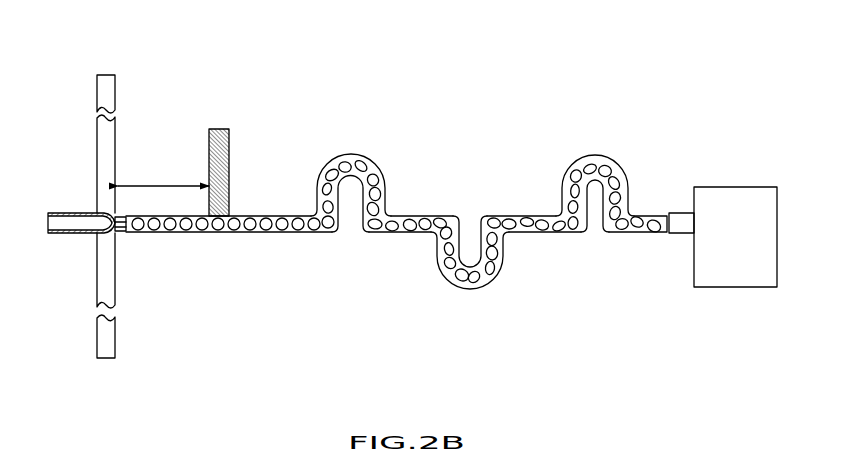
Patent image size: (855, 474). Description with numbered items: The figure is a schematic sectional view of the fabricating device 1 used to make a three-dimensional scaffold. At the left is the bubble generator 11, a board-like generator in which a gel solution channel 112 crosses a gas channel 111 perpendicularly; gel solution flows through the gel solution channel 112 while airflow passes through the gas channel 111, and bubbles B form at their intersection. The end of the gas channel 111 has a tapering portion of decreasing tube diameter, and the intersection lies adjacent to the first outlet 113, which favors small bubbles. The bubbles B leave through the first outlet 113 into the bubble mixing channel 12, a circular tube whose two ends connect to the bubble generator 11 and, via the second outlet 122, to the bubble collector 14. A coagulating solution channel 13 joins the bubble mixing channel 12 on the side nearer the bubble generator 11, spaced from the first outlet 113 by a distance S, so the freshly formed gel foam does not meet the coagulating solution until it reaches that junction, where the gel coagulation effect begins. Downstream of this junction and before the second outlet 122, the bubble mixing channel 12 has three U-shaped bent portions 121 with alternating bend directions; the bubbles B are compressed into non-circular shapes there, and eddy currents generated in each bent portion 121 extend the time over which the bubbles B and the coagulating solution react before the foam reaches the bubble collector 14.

The fabricating device 1 is at (378, 42).
The bubble generator 11 is at (66, 108).
The gas channel 111 is at (70, 222).
The gel solution channel 112 is at (107, 75).
The first outlet 113 is at (122, 233).
The bubble mixing channel 12 is at (326, 230).
The bent portion 121 is at (352, 153).
The second outlet 122 is at (695, 222).
The coagulating solution channel 13 is at (221, 140).
The bubble collector 14 is at (770, 200).
The bubbles B is at (284, 228).
The distance S is at (163, 175).